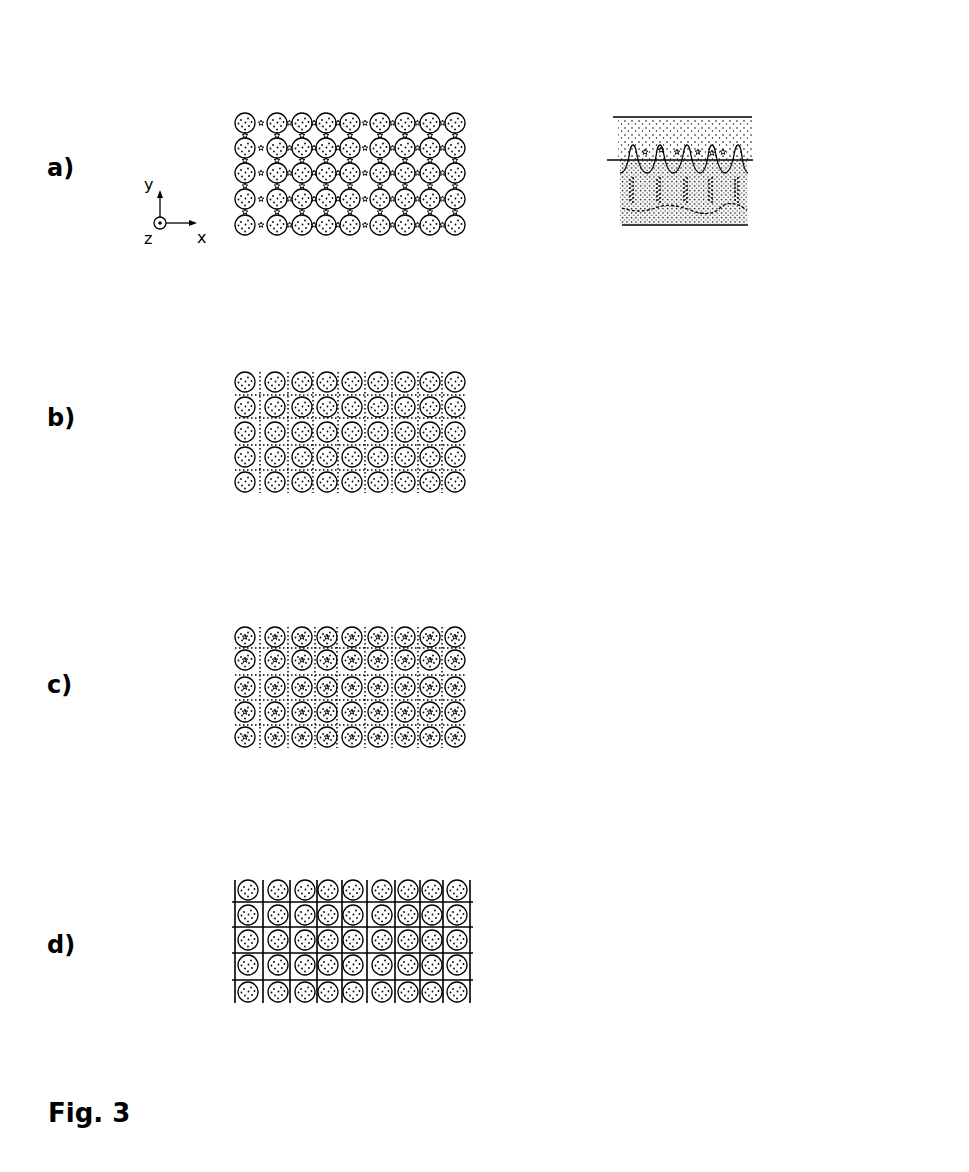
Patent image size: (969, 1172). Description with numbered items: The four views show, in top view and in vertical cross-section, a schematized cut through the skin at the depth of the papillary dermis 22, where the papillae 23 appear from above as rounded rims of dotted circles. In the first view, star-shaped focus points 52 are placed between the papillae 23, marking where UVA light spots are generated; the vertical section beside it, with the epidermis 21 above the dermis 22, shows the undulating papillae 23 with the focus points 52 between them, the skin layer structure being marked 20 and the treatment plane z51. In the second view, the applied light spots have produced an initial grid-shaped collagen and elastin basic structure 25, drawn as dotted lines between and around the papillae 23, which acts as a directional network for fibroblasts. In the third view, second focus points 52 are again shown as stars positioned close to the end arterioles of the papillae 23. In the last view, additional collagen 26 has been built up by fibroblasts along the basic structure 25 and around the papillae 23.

In FIG. 3a, the textile composite / layer structure 20 is at (713, 117).
In FIG. 3a, the epidermis 21 is at (737, 137).
In FIG. 3a, the dermis 22 is at (740, 193).
In FIG. 3a, the papillae 23 is at (277, 120).
In FIG. 3b, the papillae 23 is at (238, 403).
In FIG. 3c, the papillae 23 is at (238, 660).
In FIG. 3d, the papillae 23 is at (352, 941).
In FIG. 3b, the collagen and elastin basic structure 25 is at (435, 378).
In FIG. 3c, the collagen and elastin basic structure 25 is at (467, 678).
In FIG. 3d, the additional collagen 26 is at (442, 882).
In FIG. 3a, the focus points 52 is at (417, 125).
In FIG. 3c, the focus points 52 is at (450, 660).
In FIG. 3a, the interface plane z51 is at (770, 160).